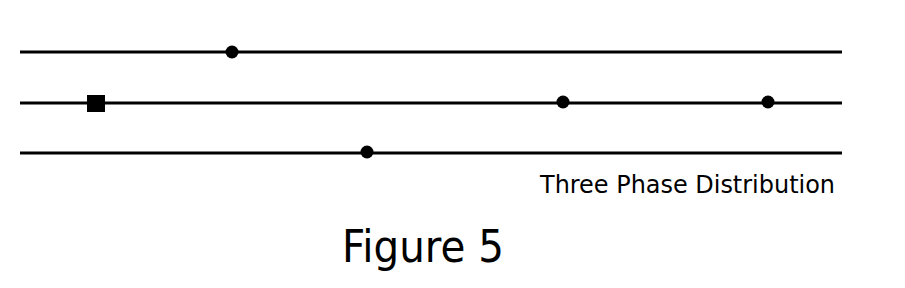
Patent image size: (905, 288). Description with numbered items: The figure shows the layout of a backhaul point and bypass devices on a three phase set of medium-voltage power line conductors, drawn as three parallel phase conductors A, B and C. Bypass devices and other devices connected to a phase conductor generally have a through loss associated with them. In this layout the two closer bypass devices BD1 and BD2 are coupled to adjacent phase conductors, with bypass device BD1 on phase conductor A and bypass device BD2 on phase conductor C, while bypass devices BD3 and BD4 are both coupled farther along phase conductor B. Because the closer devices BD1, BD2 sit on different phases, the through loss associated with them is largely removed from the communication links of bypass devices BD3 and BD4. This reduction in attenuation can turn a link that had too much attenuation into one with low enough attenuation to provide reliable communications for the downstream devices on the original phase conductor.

The phase conductor A is at (431, 36).
The phase conductor B is at (431, 92).
The phase conductor C is at (431, 138).
The bypass device BD1 is at (252, 39).
The bypass device BD2 is at (387, 169).
The bypass device BD3 is at (584, 89).
The bypass device BD4 is at (788, 89).